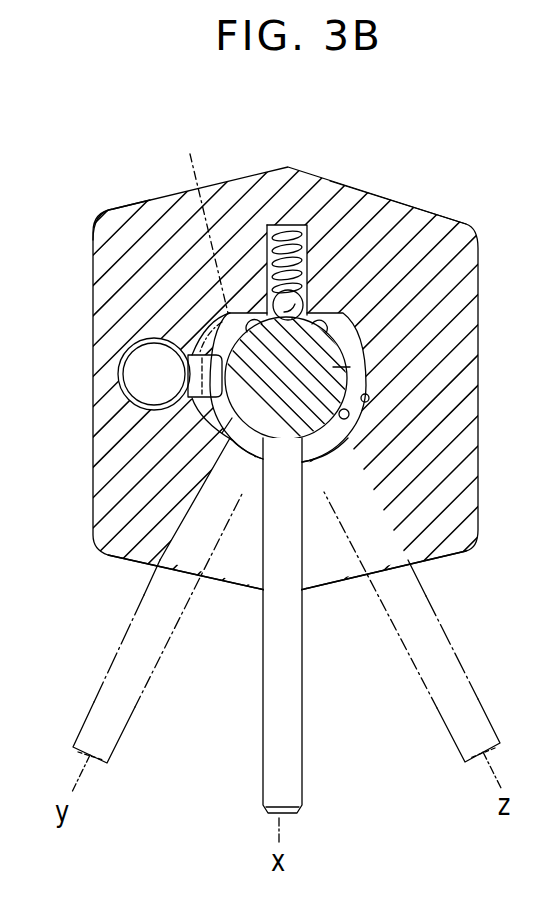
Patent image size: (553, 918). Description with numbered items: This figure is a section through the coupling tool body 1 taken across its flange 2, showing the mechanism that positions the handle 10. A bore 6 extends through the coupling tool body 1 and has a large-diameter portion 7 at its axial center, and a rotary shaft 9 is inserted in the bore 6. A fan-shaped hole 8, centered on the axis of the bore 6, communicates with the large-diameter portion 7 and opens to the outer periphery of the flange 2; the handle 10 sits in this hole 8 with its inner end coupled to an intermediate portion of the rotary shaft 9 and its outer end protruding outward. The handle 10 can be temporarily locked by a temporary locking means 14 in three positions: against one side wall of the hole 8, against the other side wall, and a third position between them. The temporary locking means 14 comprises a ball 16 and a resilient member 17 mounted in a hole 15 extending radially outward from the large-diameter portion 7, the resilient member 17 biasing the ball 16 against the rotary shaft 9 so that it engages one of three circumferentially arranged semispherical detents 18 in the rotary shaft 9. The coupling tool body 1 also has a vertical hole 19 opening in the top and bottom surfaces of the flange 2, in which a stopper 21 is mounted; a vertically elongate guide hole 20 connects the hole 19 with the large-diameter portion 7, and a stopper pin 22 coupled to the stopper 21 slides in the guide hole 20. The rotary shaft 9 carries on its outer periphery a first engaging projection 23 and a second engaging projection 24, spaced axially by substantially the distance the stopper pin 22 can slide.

The coupling tool body 1 is at (91, 241).
The flange 2 is at (97, 213).
The bore 6 is at (312, 454).
The large-diameter portion 7 is at (363, 393).
The hole 8 is at (334, 568).
The rotary shaft 9 is at (352, 365).
The handle 10 is at (265, 717).
The temporary locking means 14 is at (303, 222).
The hole 15 is at (265, 300).
The ball 16 is at (398, 205).
The resilient member 17 is at (330, 186).
The detents 18 is at (348, 318).
The hole 19 is at (120, 379).
The guide hole 20 is at (192, 352).
The stopper 21 is at (142, 357).
The stopper pin 22 is at (190, 400).
The first engaging projection 23 is at (198, 214).
The second engaging projection 24 is at (218, 432).